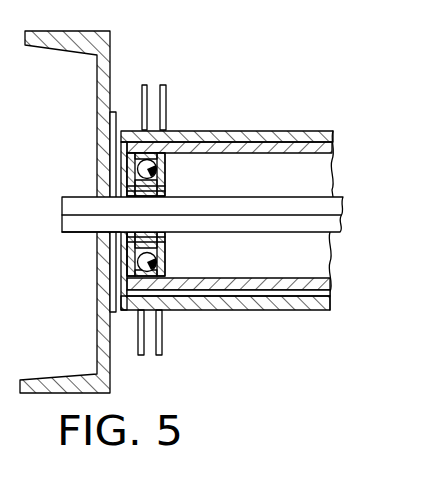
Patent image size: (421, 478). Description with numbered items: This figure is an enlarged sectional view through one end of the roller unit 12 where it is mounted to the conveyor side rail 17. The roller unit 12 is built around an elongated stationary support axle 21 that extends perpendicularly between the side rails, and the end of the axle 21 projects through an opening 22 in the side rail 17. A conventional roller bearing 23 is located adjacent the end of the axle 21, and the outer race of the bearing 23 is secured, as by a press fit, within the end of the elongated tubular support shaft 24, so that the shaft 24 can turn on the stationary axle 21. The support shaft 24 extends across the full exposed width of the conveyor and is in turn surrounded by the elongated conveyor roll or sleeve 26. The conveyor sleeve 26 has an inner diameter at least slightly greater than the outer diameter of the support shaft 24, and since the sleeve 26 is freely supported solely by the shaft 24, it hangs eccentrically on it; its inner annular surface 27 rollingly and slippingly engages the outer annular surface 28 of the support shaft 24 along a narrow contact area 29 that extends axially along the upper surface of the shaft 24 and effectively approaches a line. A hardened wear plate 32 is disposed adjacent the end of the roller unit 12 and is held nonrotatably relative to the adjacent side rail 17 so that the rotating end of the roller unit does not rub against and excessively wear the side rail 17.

The roller unit 12 is at (306, 128).
The side rail 17 is at (103, 90).
The stationary support axle 21 is at (338, 208).
The opening 22 is at (96, 230).
The roller bearing 23 is at (157, 168).
The tubular support shaft 24 is at (314, 286).
The conveyor sleeve 26 is at (272, 309).
The inner annular surface 27 is at (197, 297).
The outer annular surface 28 is at (258, 291).
The contact area 29 is at (238, 141).
The wear plate 32 is at (116, 121).